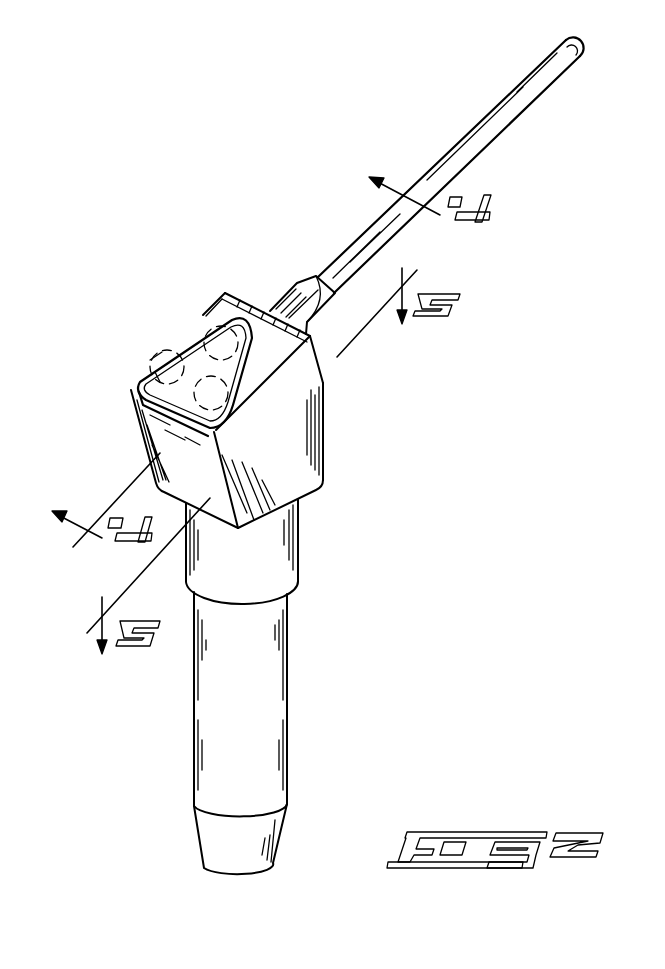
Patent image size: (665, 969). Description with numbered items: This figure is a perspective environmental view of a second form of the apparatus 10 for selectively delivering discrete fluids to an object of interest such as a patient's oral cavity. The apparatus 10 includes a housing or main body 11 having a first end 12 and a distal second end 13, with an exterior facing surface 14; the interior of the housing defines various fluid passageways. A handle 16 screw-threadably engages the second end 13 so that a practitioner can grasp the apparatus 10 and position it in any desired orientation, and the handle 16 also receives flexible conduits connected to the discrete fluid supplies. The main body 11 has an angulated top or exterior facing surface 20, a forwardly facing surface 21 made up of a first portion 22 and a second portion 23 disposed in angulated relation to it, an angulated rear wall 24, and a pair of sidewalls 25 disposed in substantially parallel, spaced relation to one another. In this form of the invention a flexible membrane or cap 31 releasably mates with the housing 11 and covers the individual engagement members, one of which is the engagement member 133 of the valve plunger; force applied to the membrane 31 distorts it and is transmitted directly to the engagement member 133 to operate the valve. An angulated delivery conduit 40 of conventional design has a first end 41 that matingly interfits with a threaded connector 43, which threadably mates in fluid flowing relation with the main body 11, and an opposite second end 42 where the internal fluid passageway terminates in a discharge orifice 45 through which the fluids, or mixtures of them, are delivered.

The apparatus 10 is at (176, 216).
The housing or main body 11 is at (340, 457).
The first end 12 is at (222, 293).
The second end 13 is at (250, 583).
The exterior facing surface 14 is at (298, 470).
The handle 16 is at (263, 693).
The angulated top or exterior facing surface 20 is at (316, 333).
The forwardly facing surface 21 is at (340, 433).
The first portion 22 is at (327, 368).
The second portion 23 is at (328, 472).
The angulated rear wall 24 is at (150, 435).
The sidewalls 25 is at (200, 314).
The flexible membrane or cap 31 is at (187, 343).
The angulated delivery conduit 40 is at (433, 138).
The first end 41 is at (338, 260).
The second end 42 is at (542, 97).
The threaded connector 43 is at (282, 302).
The discharge orifice 45 is at (629, 64).
The engagement member 133 is at (133, 362).